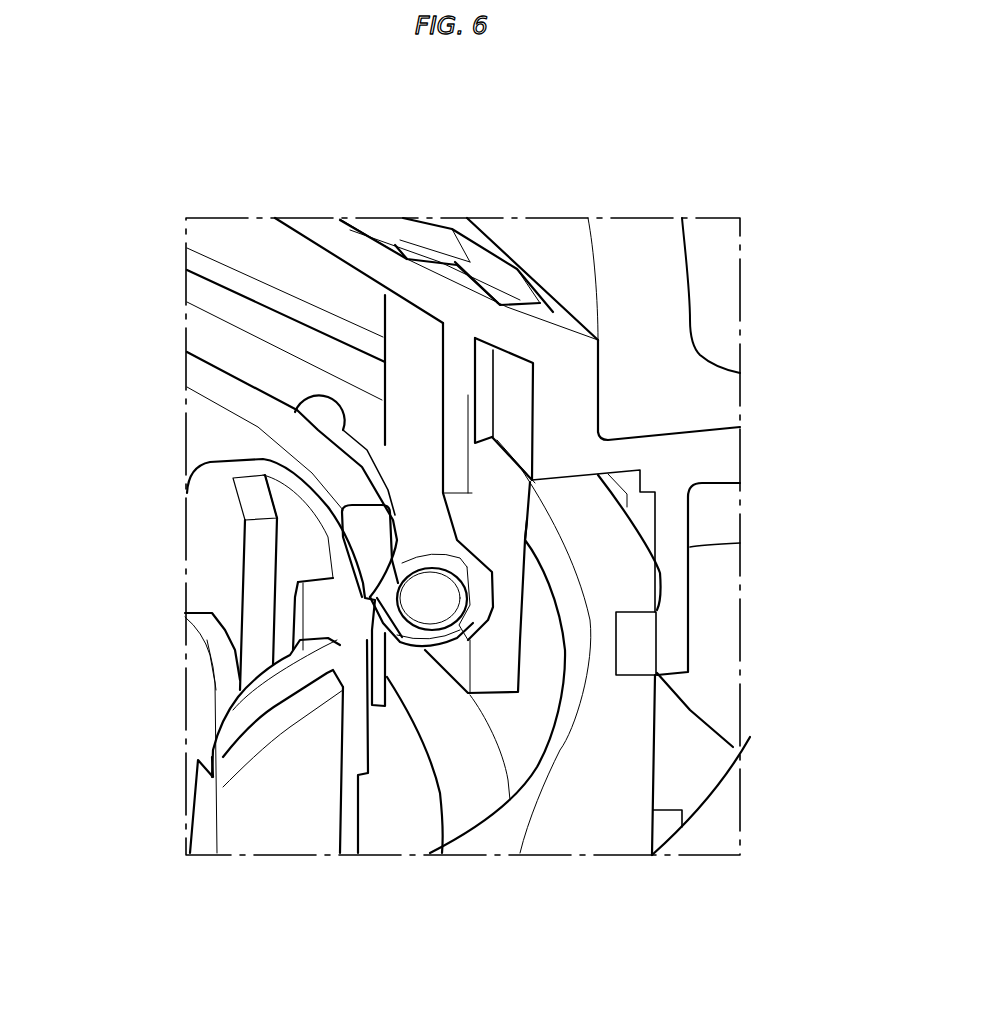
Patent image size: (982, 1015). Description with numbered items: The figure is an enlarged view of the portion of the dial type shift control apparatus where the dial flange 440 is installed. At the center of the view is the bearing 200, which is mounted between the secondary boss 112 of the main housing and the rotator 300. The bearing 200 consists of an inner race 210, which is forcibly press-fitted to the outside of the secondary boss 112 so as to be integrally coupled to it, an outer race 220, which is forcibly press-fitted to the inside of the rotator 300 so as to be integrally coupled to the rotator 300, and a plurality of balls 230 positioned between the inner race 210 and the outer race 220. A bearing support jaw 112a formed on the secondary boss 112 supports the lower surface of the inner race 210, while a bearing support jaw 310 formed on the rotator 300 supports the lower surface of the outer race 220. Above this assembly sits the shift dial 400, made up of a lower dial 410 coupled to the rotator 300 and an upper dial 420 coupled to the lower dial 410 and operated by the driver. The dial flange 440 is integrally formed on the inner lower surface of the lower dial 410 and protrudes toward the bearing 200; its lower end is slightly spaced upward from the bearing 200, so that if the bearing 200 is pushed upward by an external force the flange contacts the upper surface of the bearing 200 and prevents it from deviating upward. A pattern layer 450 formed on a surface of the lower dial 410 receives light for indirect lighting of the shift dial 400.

The secondary boss 112 is at (279, 815).
The bearing support jaw 112a is at (390, 820).
The bearing 200 is at (177, 535).
The inner race 210 is at (242, 395).
The outer race 220 is at (243, 311).
The balls 230 is at (320, 427).
The rotator 300 is at (613, 817).
The bearing support jaw 310 is at (517, 755).
The shift dial 400 is at (642, 208).
The lower dial 410 is at (570, 403).
The upper dial 420 is at (642, 282).
The dial flange 440 is at (413, 377).
The pattern layer 450 is at (490, 277).